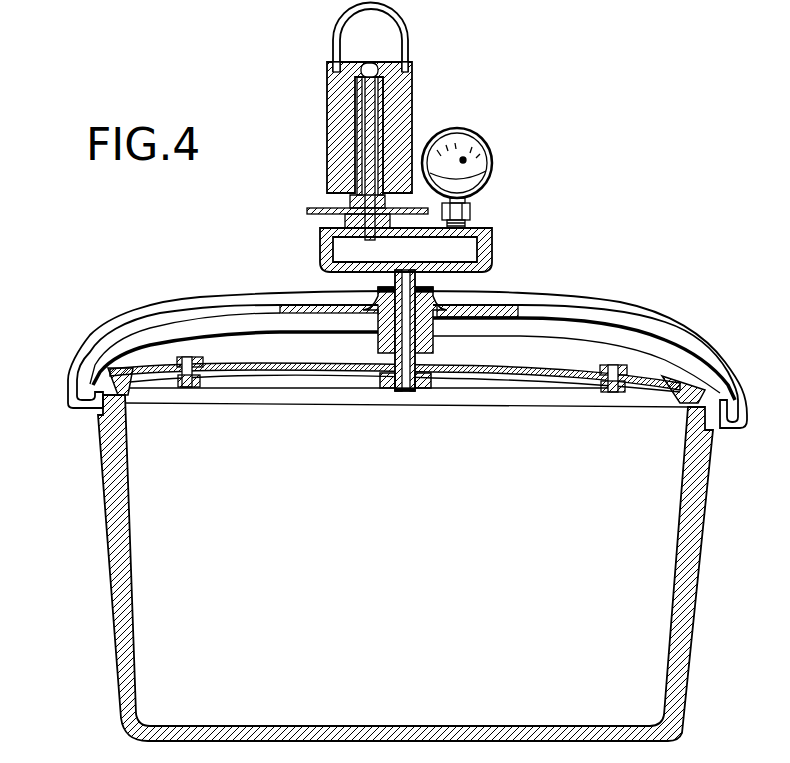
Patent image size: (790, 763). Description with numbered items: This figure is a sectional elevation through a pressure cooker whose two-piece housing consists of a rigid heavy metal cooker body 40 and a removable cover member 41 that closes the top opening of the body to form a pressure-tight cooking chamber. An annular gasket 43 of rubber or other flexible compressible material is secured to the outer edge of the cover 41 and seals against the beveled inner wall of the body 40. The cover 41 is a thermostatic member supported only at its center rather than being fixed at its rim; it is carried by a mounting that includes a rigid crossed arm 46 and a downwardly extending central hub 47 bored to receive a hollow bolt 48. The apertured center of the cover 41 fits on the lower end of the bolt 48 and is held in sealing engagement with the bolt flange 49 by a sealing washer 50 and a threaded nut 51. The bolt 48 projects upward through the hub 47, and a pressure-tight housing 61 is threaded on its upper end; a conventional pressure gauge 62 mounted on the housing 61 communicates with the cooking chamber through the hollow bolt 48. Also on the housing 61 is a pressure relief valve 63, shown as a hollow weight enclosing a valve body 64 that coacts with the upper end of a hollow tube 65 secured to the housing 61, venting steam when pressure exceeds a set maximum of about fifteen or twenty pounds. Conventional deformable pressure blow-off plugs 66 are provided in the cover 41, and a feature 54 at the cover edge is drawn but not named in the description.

The cooker body 40 is at (106, 484).
The cover member 41 is at (290, 374).
The annular gasket 43 is at (130, 368).
The rigid crossed arm 46 is at (551, 316).
The central hub 47 is at (441, 337).
The bolt 48 is at (314, 292).
The bolt flange 49 is at (383, 358).
The sealing washer 50 is at (380, 386).
The threaded nut 51 is at (429, 386).
The cover rim hook 54 is at (88, 418).
The pressure-tight housing 61 is at (493, 264).
The pressure gauge 62 is at (493, 158).
The pressure relief valve 63 is at (340, 98).
The valve body 64 is at (372, 78).
The hollow tube 65 is at (380, 120).
The pressure blow-off plug 66 is at (190, 387).